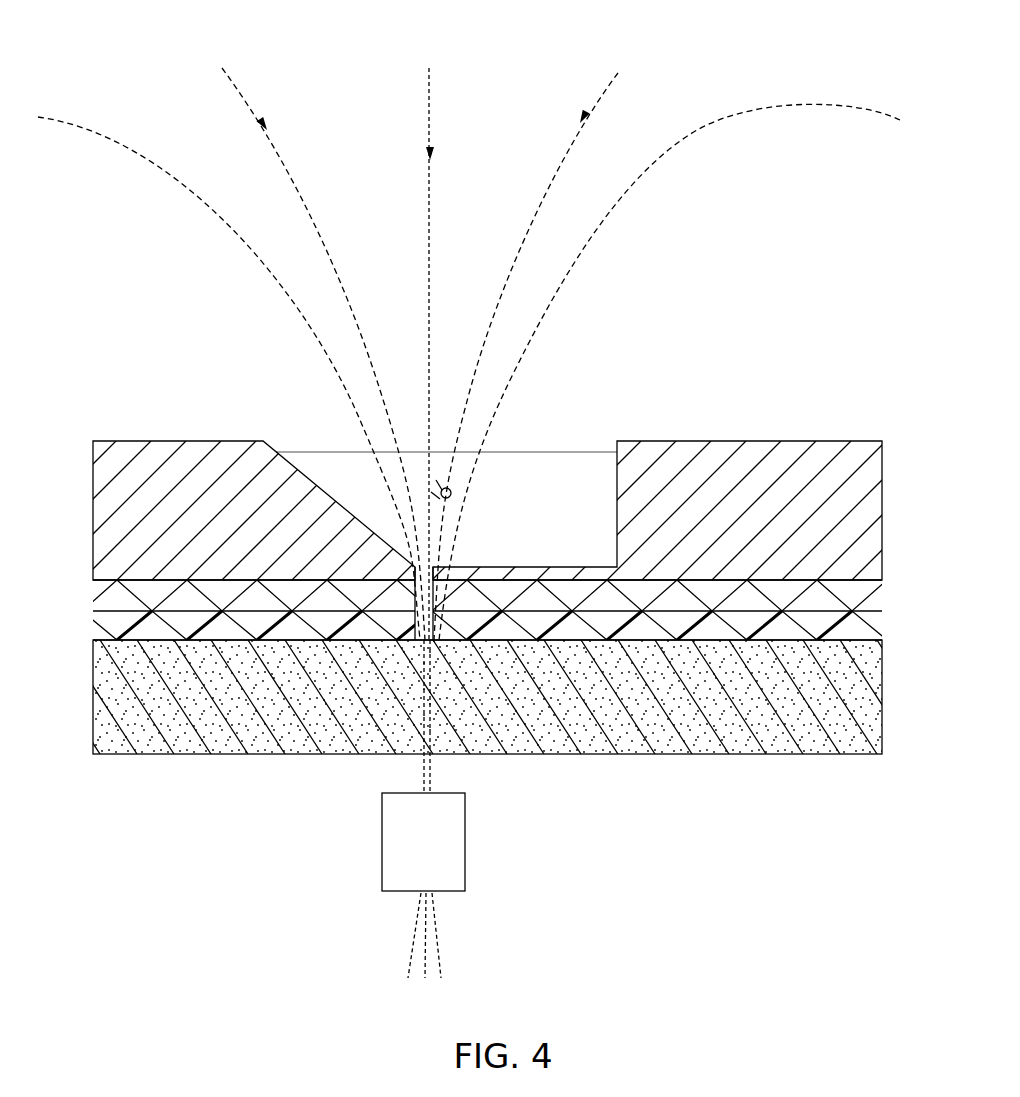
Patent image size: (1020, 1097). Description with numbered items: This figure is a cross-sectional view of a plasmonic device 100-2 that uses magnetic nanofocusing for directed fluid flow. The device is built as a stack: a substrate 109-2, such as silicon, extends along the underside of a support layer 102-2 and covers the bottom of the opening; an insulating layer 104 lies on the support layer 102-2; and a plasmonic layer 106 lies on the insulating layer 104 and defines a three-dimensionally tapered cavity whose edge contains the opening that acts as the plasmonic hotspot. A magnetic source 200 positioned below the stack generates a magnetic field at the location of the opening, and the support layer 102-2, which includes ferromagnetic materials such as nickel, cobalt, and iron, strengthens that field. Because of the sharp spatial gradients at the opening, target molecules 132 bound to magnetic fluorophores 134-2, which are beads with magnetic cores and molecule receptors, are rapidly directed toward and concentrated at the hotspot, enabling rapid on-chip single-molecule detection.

The plasmonic device 100-2 is at (173, 301).
The target molecules 132 is at (440, 483).
The magnetic fluorophores 134-2 is at (451, 494).
The plasmonic layer 106 is at (870, 512).
The insulating layer 104 is at (870, 598).
The support layer 102-2 is at (868, 620).
The substrate 109-2 is at (868, 706).
The magnetic source 200 is at (382, 840).